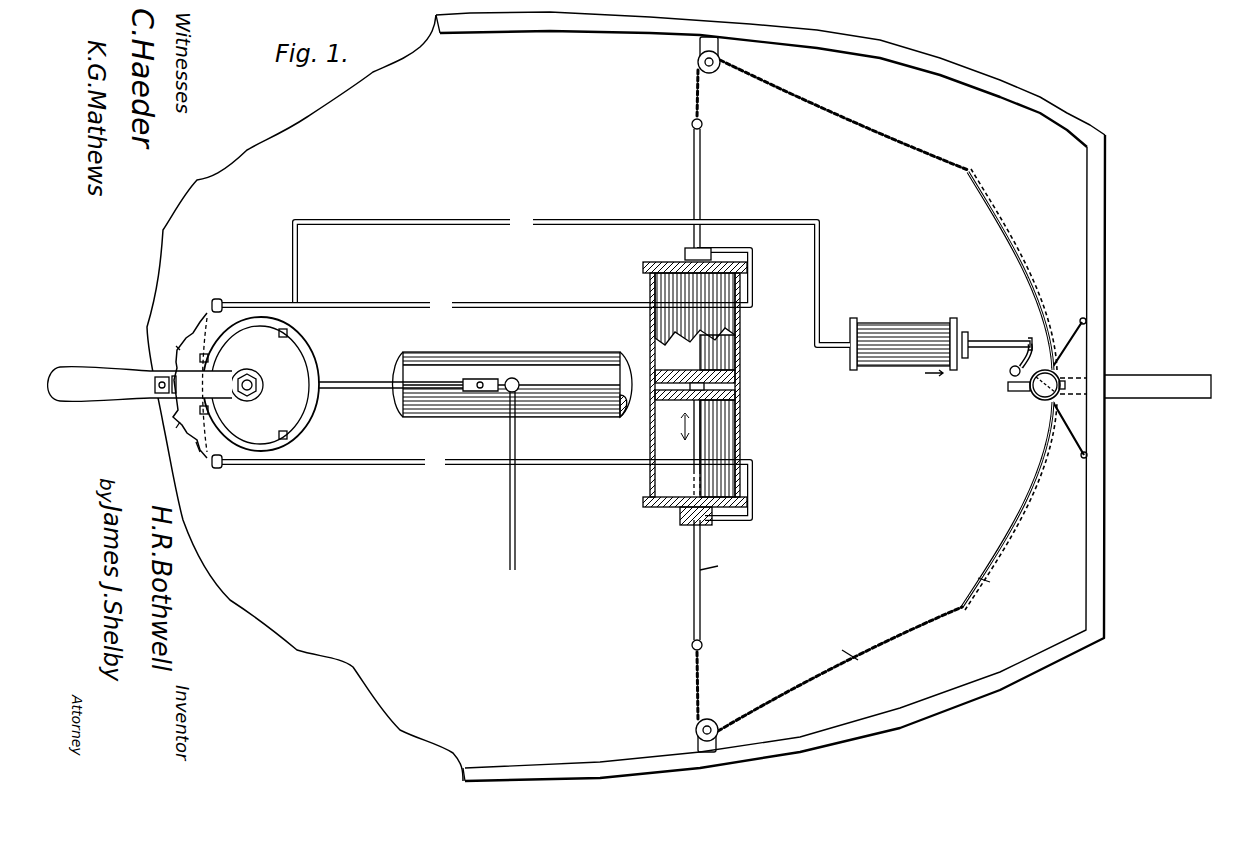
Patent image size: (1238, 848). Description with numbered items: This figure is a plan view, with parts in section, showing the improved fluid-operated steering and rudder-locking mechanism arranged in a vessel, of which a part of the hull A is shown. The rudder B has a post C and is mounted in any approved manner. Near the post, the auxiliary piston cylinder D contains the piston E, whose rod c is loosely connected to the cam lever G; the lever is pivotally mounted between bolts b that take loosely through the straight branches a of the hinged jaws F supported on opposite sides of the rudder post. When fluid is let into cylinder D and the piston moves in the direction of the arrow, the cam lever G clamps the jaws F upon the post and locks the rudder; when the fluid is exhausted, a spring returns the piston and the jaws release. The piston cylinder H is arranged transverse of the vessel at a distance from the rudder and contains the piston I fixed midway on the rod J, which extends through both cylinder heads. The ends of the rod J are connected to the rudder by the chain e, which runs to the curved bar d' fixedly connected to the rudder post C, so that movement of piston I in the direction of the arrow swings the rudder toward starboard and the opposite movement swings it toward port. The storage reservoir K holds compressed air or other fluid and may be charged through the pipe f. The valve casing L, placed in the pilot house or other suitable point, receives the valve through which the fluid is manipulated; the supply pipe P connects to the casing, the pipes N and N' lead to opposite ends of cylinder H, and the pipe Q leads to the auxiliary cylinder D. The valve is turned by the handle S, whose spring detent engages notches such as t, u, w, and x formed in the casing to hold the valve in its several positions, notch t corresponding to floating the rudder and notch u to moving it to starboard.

The vessel hull A is at (530, 33).
The rudder B is at (1138, 392).
The rudder post C is at (1042, 393).
The auxiliary piston cylinder D is at (905, 374).
The piston E is at (885, 332).
The jaws F is at (1061, 391).
The cam lever G is at (1010, 369).
The piston cylinder H is at (742, 348).
The piston I is at (738, 405).
The rod J is at (700, 200).
The storage reservoir K is at (482, 356).
The valve casing L is at (312, 350).
The pipe N is at (481, 281).
The pipe N' is at (481, 486).
The supply pipe P is at (370, 390).
The pipe Q is at (458, 226).
The handle S is at (122, 396).
The straight branches a is at (1038, 390).
The bolts b is at (1008, 387).
The rod c is at (1005, 341).
The curved bar d' is at (1004, 389).
The chain e is at (888, 135).
The pipe f is at (520, 492).
The notch t is at (186, 333).
The notch u is at (176, 346).
The notch w is at (176, 428).
The notch x is at (192, 450).